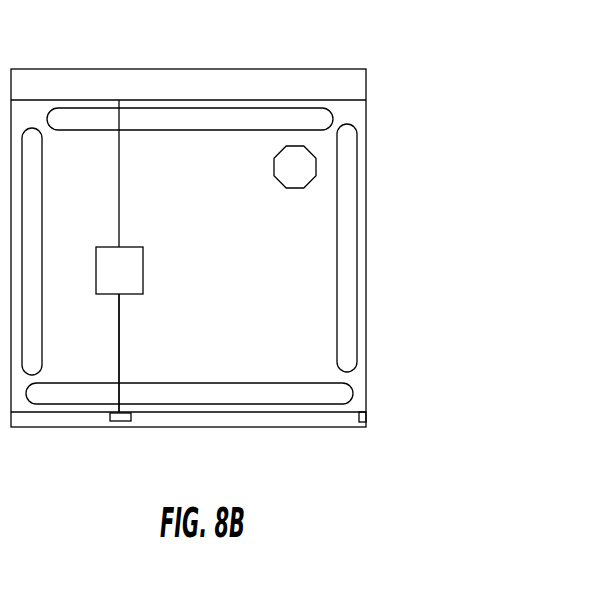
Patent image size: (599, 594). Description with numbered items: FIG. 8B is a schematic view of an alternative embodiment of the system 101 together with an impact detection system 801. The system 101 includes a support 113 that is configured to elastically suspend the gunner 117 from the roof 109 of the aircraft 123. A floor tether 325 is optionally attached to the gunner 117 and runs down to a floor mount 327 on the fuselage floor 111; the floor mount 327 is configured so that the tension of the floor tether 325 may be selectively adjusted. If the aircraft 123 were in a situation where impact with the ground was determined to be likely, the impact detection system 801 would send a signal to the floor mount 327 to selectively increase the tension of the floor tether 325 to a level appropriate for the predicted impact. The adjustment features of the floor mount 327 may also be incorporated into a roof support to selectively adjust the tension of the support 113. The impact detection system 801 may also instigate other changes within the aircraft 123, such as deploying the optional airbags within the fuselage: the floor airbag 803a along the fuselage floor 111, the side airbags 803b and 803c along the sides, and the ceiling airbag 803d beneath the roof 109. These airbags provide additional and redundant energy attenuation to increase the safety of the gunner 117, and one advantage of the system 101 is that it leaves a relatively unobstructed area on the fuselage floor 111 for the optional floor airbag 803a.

The system 101 is at (86, 176).
The roof 109 is at (148, 100).
The fuselage floor 111 is at (362, 424).
The support 113 is at (120, 193).
The gunner 117 is at (140, 247).
The aircraft 123 is at (254, 62).
The floor tether 325 is at (120, 310).
The floor mount 327 is at (122, 422).
The impact detection system 801 is at (296, 188).
The floor airbag 803a is at (238, 404).
The side airbag 803b is at (337, 280).
The side airbag 803c is at (43, 358).
The ceiling airbag 803d is at (280, 108).